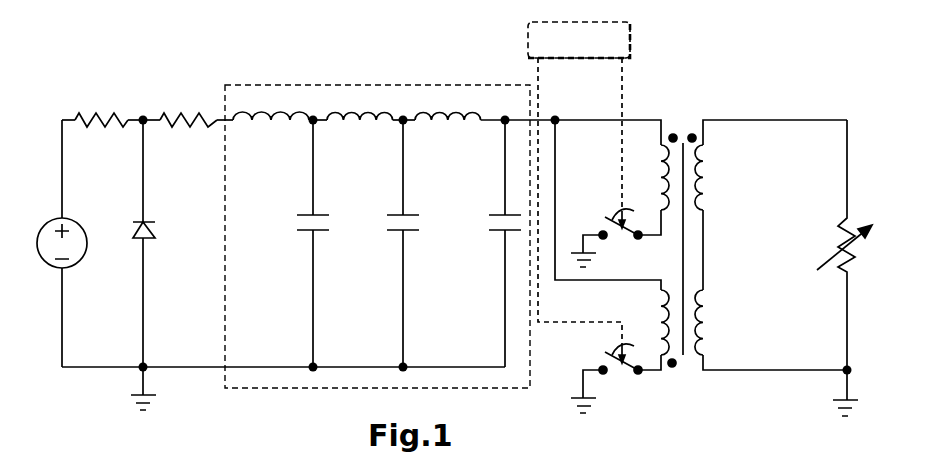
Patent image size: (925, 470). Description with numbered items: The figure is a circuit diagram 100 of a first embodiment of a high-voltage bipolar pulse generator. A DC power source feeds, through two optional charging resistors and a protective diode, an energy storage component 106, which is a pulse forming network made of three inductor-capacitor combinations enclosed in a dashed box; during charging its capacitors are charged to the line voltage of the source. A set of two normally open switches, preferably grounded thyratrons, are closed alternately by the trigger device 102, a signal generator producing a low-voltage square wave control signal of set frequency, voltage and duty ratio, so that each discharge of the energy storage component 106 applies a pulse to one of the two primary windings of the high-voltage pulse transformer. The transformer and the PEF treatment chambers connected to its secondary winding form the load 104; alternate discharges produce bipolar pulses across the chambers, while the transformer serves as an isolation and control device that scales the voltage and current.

The circuit diagram 100 is at (465, 215).
The trigger device 102 is at (630, 45).
The load 104 is at (850, 222).
The energy storage component 106 is at (317, 83).